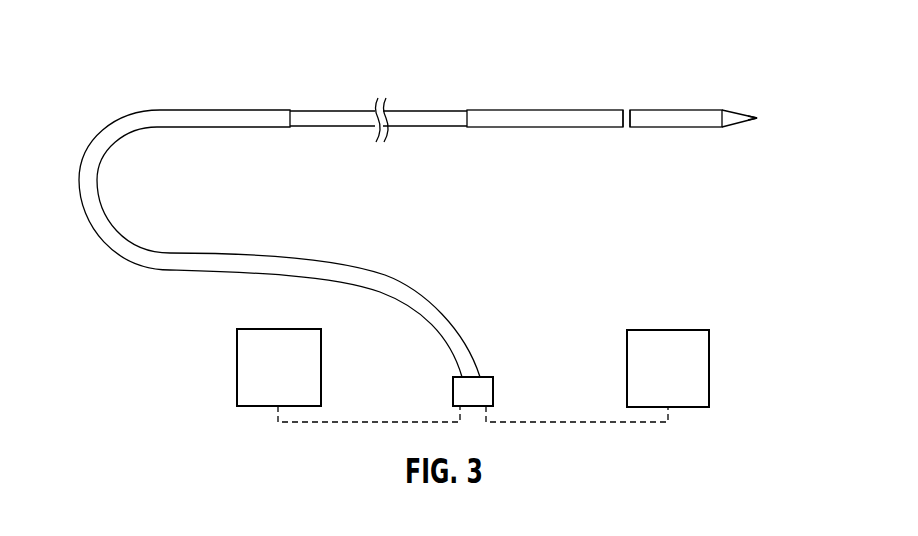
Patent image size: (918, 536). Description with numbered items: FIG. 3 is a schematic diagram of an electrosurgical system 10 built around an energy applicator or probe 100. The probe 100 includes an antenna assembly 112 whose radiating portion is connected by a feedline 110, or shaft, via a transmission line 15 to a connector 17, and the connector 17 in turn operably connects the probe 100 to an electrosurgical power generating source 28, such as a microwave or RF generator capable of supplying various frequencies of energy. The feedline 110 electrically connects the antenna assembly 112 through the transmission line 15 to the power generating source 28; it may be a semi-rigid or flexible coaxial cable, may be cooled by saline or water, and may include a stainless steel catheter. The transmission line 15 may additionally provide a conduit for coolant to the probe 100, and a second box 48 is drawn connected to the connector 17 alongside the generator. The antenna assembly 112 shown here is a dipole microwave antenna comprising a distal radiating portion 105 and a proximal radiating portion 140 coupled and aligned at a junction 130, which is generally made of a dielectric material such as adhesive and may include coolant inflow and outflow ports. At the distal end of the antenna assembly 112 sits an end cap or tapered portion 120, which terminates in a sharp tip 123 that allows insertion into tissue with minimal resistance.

The electrosurgical system 10 is at (181, 29).
The transmission line 15 is at (228, 110).
The connector 17 is at (488, 377).
The electrosurgical power generating source 28 is at (278, 329).
The coolant supply 48 is at (668, 330).
The probe 100 is at (621, 141).
The distal radiating portion 105 is at (649, 146).
The feedline 110 is at (424, 110).
The antenna assembly 112 is at (755, 68).
The end cap or tapered portion 120 is at (735, 112).
The sharp tip 123 is at (746, 120).
The junction 130 is at (626, 110).
The proximal radiating portion 140 is at (531, 146).